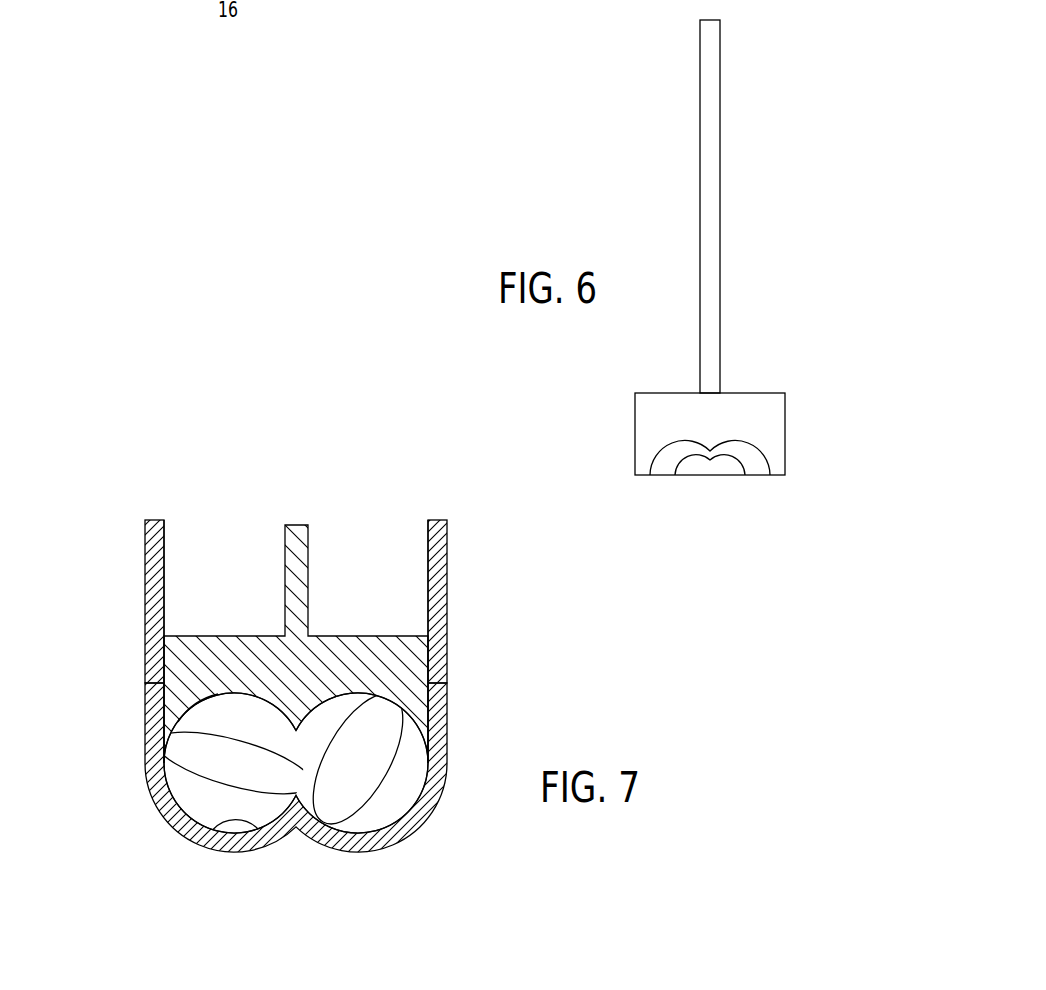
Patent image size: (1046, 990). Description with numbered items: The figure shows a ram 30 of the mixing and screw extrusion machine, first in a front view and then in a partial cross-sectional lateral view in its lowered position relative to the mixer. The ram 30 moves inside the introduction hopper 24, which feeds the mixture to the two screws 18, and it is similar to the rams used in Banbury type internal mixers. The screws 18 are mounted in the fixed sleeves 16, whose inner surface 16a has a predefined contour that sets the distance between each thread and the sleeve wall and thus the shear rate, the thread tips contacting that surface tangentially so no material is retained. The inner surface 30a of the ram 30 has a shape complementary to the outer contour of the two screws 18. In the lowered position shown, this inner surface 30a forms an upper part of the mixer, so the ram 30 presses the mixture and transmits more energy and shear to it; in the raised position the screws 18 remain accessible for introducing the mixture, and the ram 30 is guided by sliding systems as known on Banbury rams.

In FIG. 7, the fixed sleeves 16 is at (447, 708).
In FIG. 7, the inner surface of the sleeves 16a is at (245, 822).
In FIG. 7, the screws 18 is at (193, 775).
In FIG. 7, the introduction hopper 24 is at (145, 580).
In FIG. 6, the ram 30 is at (788, 138).
In FIG. 7, the ram 30 is at (369, 643).
In FIG. 6, the inner surface of the ram 30a is at (737, 461).
In FIG. 7, the inner surface of the ram 30a is at (177, 722).